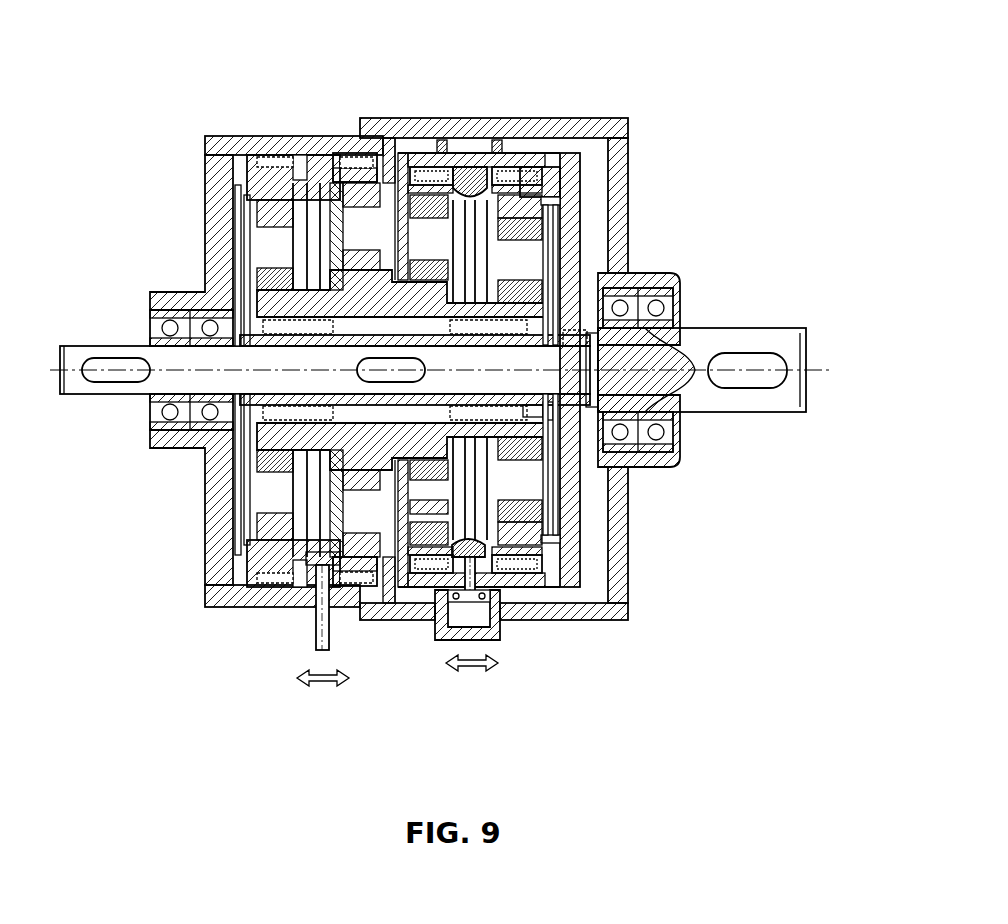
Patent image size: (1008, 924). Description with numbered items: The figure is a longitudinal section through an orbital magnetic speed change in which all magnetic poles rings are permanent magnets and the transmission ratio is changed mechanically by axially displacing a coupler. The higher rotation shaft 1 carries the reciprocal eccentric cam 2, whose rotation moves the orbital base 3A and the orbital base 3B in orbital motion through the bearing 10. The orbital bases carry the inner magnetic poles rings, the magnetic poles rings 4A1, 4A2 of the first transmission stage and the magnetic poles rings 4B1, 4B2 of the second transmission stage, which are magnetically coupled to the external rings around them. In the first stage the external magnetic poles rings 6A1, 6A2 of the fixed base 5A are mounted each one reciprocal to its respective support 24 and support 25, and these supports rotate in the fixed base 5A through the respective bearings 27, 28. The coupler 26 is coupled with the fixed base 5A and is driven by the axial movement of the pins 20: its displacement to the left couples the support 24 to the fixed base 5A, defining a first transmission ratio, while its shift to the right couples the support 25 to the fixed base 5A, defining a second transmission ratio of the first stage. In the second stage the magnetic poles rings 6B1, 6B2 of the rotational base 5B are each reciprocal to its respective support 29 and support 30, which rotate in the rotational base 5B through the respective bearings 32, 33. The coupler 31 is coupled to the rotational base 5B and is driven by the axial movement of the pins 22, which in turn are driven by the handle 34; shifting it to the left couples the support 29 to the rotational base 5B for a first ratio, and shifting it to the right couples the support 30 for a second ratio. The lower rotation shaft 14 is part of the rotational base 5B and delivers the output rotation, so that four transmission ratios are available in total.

The higher rotation shaft 1 is at (148, 355).
The eccentric cam 2 is at (285, 430).
The bearing 10 is at (313, 465).
The lower rotation shaft 14 is at (725, 418).
The pins 20 is at (320, 617).
The pins 22 is at (480, 578).
The support 24 is at (273, 185).
The support 25 is at (308, 137).
The coupler 26 is at (300, 587).
The bearing 27 is at (233, 136).
The bearing 28 is at (355, 150).
The support 29 is at (440, 172).
The support 30 is at (525, 188).
The coupler 31 is at (474, 186).
The bearing 32 is at (430, 165).
The bearing 33 is at (520, 163).
The handle 34 is at (490, 640).
The orbital base 3A is at (313, 467).
The orbital base 3B is at (540, 303).
The magnetic poles ring 4A1 is at (262, 273).
The magnetic poles ring 4A2 is at (357, 257).
The magnetic poles ring 4B1 is at (430, 505).
The magnetic poles ring 4B2 is at (533, 490).
The fixed base 5A is at (215, 587).
The rotational base 5B is at (560, 555).
The magnetic poles ring 6A1 is at (255, 560).
The magnetic poles ring 6A2 is at (340, 580).
The magnetic poles ring 6B1 is at (538, 200).
The magnetic poles ring 6B2 is at (545, 231).